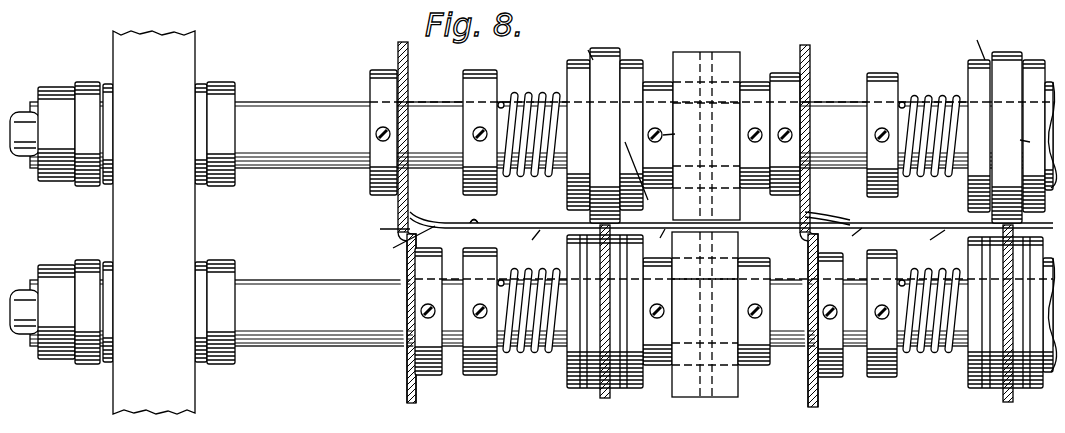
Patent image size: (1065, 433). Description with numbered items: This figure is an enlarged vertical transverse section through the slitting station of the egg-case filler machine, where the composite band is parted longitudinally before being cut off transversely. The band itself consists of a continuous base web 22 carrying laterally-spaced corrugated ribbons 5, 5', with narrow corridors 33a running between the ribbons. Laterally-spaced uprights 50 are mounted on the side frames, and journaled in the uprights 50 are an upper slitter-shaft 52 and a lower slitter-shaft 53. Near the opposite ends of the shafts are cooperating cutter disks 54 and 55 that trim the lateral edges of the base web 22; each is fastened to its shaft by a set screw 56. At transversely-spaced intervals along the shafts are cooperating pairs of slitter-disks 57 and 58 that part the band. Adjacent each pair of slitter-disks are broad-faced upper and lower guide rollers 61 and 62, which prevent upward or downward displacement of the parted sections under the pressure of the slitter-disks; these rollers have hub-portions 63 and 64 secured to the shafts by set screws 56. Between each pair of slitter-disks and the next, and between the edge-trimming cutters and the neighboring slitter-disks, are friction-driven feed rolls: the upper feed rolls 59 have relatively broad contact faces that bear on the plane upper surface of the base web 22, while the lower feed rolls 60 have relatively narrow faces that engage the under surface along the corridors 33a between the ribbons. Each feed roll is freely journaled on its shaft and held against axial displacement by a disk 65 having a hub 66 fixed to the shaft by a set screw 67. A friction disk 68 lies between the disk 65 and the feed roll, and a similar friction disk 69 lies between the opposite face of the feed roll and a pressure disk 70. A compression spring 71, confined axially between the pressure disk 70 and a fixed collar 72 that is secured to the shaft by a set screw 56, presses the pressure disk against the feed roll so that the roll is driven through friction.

The corrugated ribbon 5 is at (734, 244).
The corrugated ribbon 5' is at (613, 246).
The base web 22 is at (522, 222).
The corridors 33a is at (475, 225).
The uprights 50 is at (154, 222).
The upper slitter-shaft 52 is at (541, 135).
The lower slitter-shaft 53 is at (541, 313).
The cutter disk 54 is at (399, 50).
The cutter disk 55 is at (405, 390).
The set screw 56 is at (378, 140).
The slitter-disk 57 is at (805, 84).
The slitter-disk 58 is at (820, 395).
The upper feed roll 59 is at (582, 139).
The lower feed roll 60 is at (606, 396).
The upper guide roller 61 is at (694, 66).
The lower guide roller 62 is at (706, 327).
The hub-portion 63 is at (752, 82).
The hub-portion 64 is at (758, 366).
The disk 65 is at (636, 60).
The hub 66 is at (658, 83).
The set screw 67 is at (682, 133).
The friction disk 68 is at (827, 173).
The friction disk 69 is at (776, 39).
The pressure disk 70 is at (570, 68).
The compression spring 71 is at (540, 93).
The fixed collar 72 is at (470, 83).